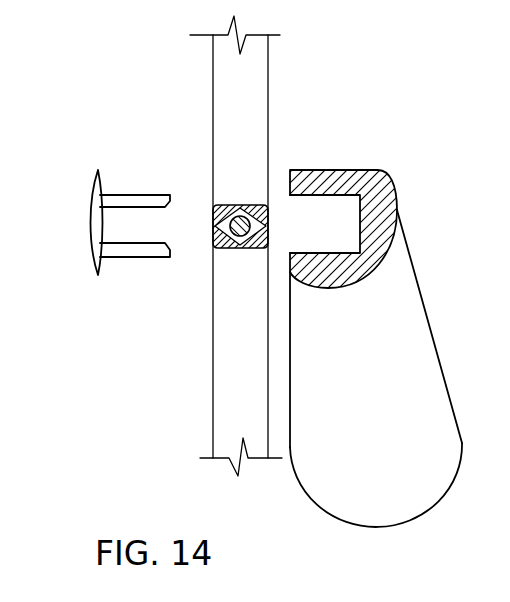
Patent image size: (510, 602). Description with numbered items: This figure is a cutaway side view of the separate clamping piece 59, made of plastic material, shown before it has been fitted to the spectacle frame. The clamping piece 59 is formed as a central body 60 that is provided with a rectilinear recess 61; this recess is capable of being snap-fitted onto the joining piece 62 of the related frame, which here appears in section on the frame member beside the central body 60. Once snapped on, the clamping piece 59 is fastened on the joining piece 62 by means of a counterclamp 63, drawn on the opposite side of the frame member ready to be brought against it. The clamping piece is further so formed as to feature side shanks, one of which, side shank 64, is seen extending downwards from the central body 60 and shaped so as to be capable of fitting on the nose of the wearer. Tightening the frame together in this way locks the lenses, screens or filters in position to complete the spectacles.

The clamping piece 59 is at (449, 493).
The central body 60 is at (403, 202).
The rectilinear recess 61 is at (310, 216).
The joining piece 62 is at (240, 205).
The counterclamp 63 is at (88, 200).
The side shank 64 is at (396, 401).